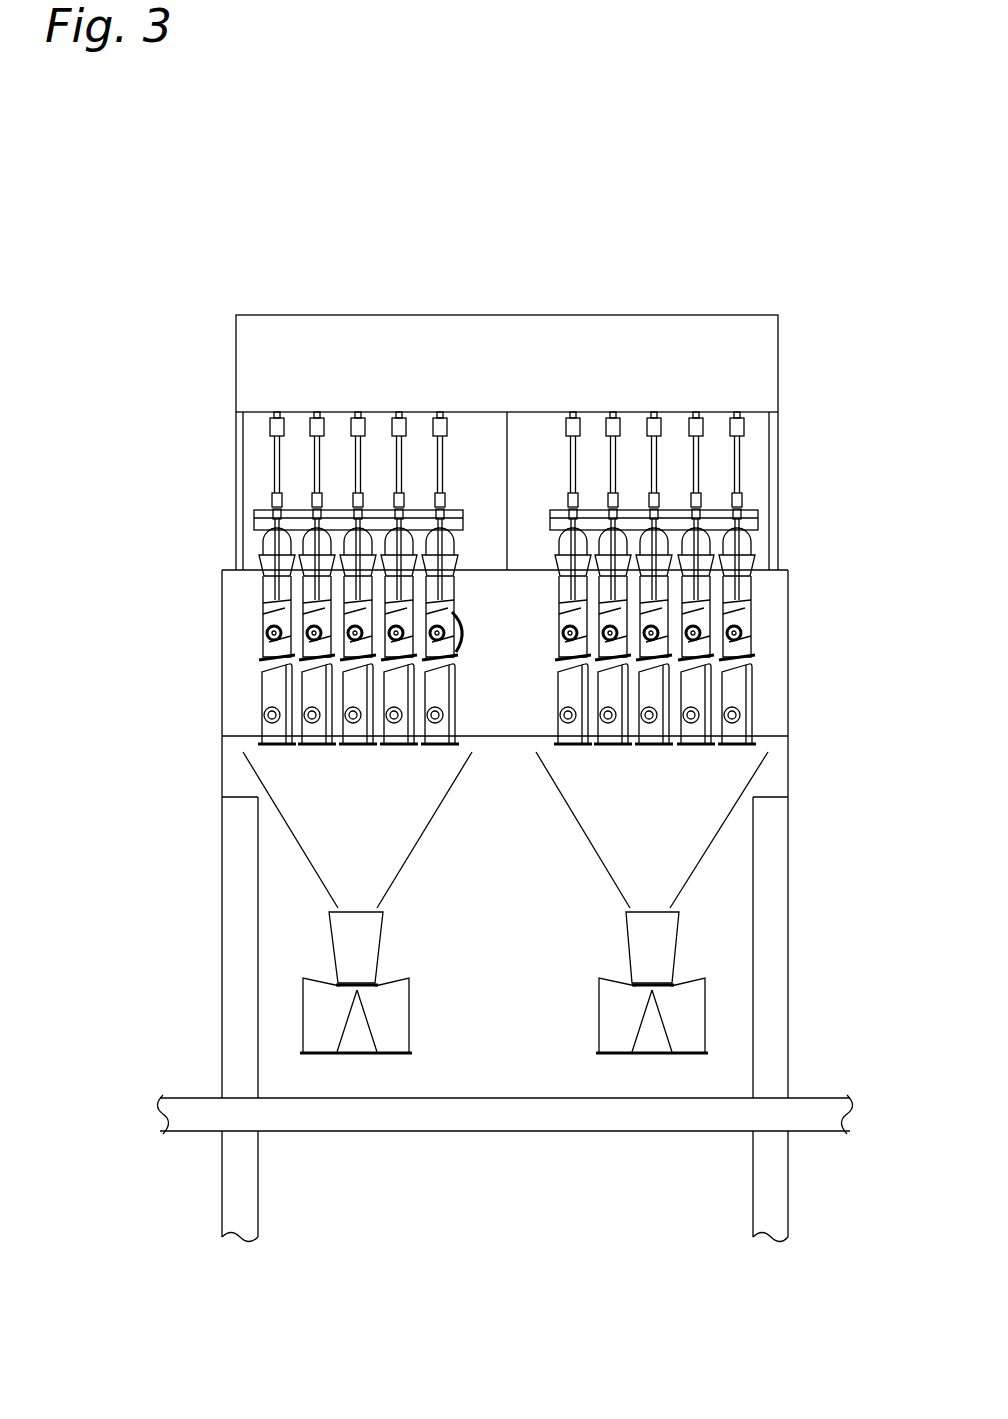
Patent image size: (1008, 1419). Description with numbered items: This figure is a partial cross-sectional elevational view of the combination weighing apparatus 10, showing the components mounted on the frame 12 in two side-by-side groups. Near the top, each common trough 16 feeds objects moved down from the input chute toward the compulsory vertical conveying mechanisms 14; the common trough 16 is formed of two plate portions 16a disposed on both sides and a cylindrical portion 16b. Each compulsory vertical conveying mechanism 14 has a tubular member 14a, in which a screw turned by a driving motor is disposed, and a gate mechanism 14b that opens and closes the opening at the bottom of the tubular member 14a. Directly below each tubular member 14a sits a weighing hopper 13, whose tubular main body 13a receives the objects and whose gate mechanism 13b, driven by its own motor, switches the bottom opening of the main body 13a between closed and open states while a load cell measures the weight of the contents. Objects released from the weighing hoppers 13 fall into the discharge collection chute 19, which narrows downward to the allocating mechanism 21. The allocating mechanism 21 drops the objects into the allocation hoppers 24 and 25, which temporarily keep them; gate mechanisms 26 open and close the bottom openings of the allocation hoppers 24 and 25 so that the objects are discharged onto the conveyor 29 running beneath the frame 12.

The combination weighing apparatus 10 is at (663, 236).
The frame 12 is at (793, 773).
The weighing hopper 13 is at (757, 697).
The tubular main body 13a is at (447, 695).
The gate mechanism 13b is at (365, 746).
The compulsory vertical conveying mechanism 14 is at (757, 612).
The tubular member 14a is at (263, 617).
The gate mechanism 14b is at (267, 660).
The common trough 16 is at (559, 505).
The plate portion 16a is at (633, 530).
The cylindrical portion 16b is at (272, 551).
The discharge collection chute 19 is at (320, 889).
The allocating mechanism 21 is at (383, 948).
The allocation hopper 24 is at (317, 1025).
The allocation hopper 25 is at (395, 1020).
The gate mechanism 26 is at (355, 1058).
The conveyor 29 is at (497, 1134).